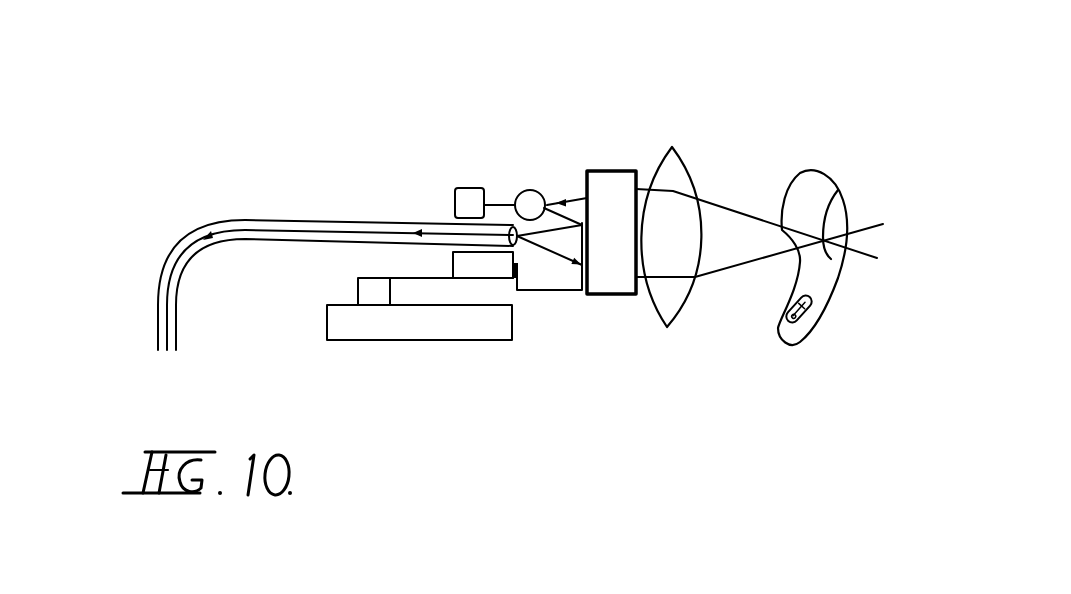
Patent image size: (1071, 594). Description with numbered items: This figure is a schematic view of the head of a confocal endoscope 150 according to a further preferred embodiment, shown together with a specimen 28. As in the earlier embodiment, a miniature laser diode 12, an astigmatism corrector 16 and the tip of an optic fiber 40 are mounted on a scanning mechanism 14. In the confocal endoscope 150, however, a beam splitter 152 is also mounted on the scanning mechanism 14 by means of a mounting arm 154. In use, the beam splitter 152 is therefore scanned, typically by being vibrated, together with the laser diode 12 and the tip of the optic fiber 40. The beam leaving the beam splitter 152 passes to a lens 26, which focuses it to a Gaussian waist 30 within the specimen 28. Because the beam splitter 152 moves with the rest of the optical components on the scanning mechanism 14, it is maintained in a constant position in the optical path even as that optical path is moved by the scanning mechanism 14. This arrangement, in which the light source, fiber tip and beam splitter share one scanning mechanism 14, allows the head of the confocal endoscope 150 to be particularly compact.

The confocal endoscope 150 is at (220, 193).
The optic fiber 40 is at (179, 341).
The miniature laser diode 12 is at (463, 198).
The astigmatism corrector 16 is at (527, 208).
The beam splitter 152 is at (610, 170).
The mounting arm 154 is at (562, 292).
The scanning mechanism 14 is at (440, 332).
The lens 26 is at (660, 318).
The Gaussian waist 30 is at (838, 190).
The specimen 28 is at (777, 331).